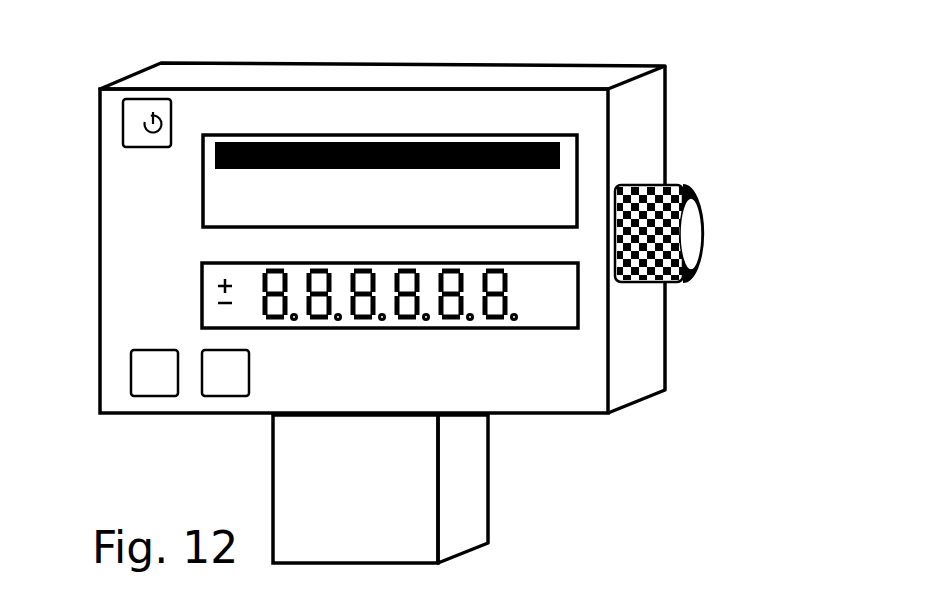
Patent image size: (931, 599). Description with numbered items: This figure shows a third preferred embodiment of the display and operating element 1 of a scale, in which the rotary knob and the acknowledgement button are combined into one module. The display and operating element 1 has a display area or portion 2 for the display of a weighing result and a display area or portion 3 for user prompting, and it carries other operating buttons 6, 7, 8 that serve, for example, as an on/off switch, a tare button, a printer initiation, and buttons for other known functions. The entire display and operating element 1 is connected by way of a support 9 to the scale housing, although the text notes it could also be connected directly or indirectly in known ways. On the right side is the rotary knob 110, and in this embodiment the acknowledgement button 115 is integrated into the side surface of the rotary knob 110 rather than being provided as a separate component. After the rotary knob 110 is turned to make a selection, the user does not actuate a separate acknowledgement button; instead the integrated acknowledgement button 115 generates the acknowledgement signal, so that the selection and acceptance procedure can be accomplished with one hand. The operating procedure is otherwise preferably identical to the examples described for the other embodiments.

The display and operating element 1 is at (533, 393).
The display area or portion 2 is at (565, 315).
The display area or portion 3 is at (572, 182).
The operating button 6 is at (125, 115).
The operating button 7 is at (145, 390).
The operating button 8 is at (218, 392).
The support 9 is at (468, 522).
The rotary knob 110 is at (704, 273).
The acknowledgement button 115 is at (695, 237).